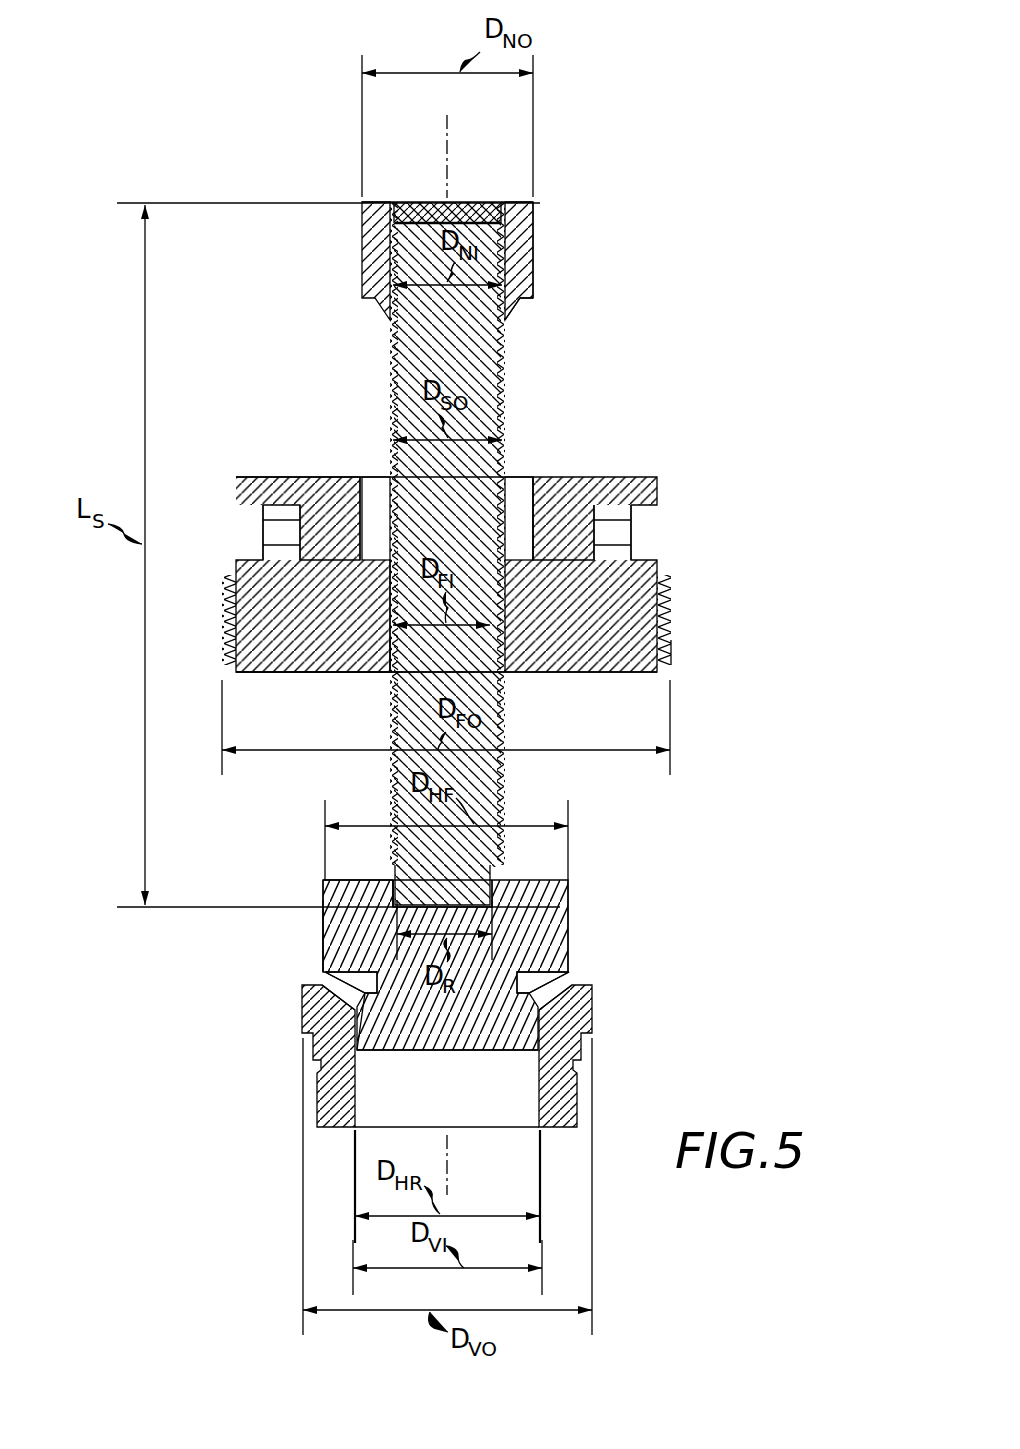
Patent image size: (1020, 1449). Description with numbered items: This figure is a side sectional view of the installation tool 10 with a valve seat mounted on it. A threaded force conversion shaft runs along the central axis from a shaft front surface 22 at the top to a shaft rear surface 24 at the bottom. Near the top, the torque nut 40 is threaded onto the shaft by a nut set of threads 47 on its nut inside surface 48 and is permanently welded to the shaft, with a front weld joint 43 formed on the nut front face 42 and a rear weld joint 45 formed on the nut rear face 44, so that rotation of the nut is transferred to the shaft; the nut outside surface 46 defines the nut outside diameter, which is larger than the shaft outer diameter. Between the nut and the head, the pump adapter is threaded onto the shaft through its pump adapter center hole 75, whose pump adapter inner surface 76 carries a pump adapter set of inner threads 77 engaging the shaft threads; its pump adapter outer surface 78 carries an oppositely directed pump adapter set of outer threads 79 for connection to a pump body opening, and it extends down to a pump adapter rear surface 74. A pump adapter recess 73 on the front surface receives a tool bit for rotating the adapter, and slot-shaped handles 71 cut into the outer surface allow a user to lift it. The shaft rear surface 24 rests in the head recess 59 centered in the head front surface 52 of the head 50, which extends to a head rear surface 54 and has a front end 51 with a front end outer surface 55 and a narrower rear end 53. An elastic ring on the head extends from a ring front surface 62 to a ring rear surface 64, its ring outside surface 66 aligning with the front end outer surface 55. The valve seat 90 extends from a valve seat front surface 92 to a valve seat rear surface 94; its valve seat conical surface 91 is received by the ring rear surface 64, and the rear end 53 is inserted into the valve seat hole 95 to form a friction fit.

The installation tool 10 is at (270, 136).
The shaft front surface 22 is at (452, 205).
The shaft rear surface 24 is at (515, 931).
The torque nut 40 is at (360, 238).
The nut front face 42 is at (372, 201).
The front weld joint 43 is at (498, 211).
The nut rear face 44 is at (536, 301).
The rear weld joint 45 is at (513, 318).
The nut outer surface 46 is at (535, 236).
The nut set of threads 47 is at (403, 211).
The nut inside surface 48 is at (483, 209).
The head 50 is at (559, 912).
The front end 51 is at (328, 886).
The head front surface 52 is at (344, 876).
The rear end 53 is at (358, 1022).
The head rear surface 54 is at (445, 1052).
The front end outer surface 55 is at (330, 901).
The head recess 59 is at (398, 879).
The ring front surface 62 is at (560, 962).
The ring rear surface 64 is at (580, 1000).
The ring outside surface 66 is at (358, 975).
The handles 71 is at (268, 516).
The pump adapter recess 73 is at (522, 477).
The pump adapter rear surface 74 is at (574, 676).
The pump adapter center hole 75 is at (410, 608).
The pump adapter inner surface 76 is at (492, 556).
The pump adapter set of inner threads 77 is at (400, 657).
The pump adapter outer surface 78 is at (664, 610).
The pump adapter set of outer threads 79 is at (668, 662).
The valve seat 90 is at (574, 1055).
The valve seat conical surface 91 is at (580, 985).
The valve seat front surface 92 is at (305, 988).
The valve seat rear surface 94 is at (333, 1128).
The valve seat hole 95 is at (472, 1113).